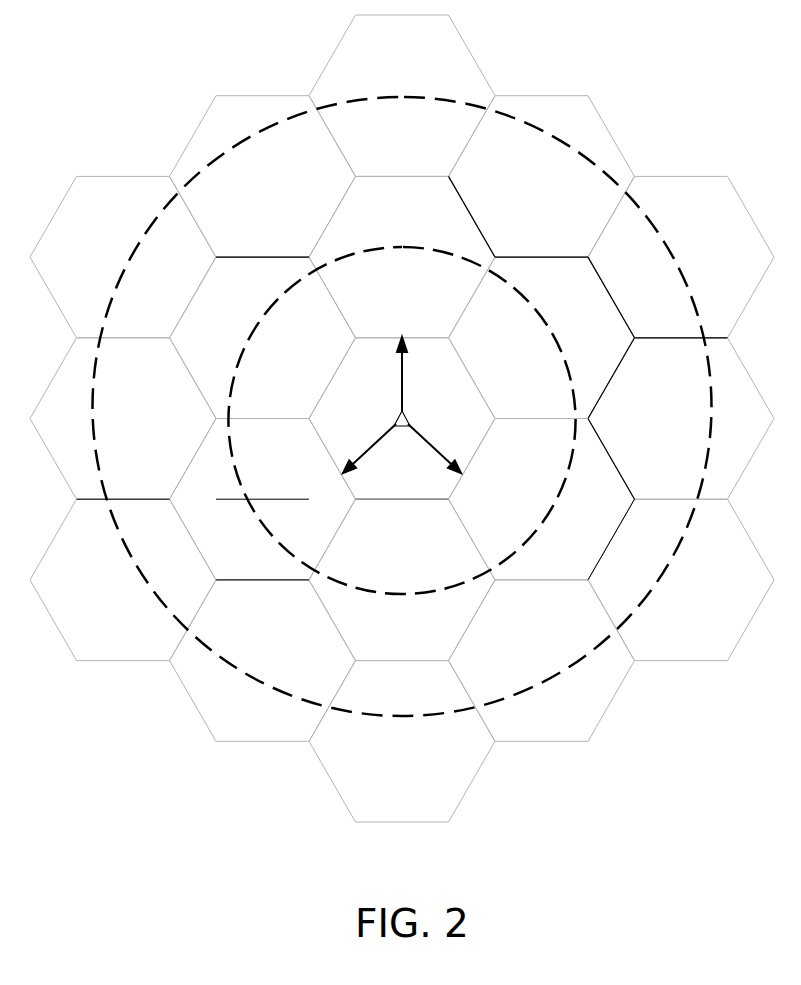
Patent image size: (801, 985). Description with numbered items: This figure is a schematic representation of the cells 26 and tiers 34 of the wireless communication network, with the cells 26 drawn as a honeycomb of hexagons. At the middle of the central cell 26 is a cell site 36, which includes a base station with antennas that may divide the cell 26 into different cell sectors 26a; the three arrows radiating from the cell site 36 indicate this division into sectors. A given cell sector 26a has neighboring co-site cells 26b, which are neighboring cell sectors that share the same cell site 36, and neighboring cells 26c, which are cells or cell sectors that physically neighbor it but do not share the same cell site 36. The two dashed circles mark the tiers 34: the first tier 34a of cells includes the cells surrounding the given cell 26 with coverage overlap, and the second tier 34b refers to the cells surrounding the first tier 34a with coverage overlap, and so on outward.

The cell 26 is at (425, 337).
The cell sector 26a is at (373, 398).
The neighboring co-site cell 26b is at (445, 437).
The neighboring cell 26c is at (548, 270).
The tier 34 is at (421, 406).
The first tier 34a is at (558, 352).
The second tier 34b is at (677, 270).
The cell site 36 is at (405, 418).